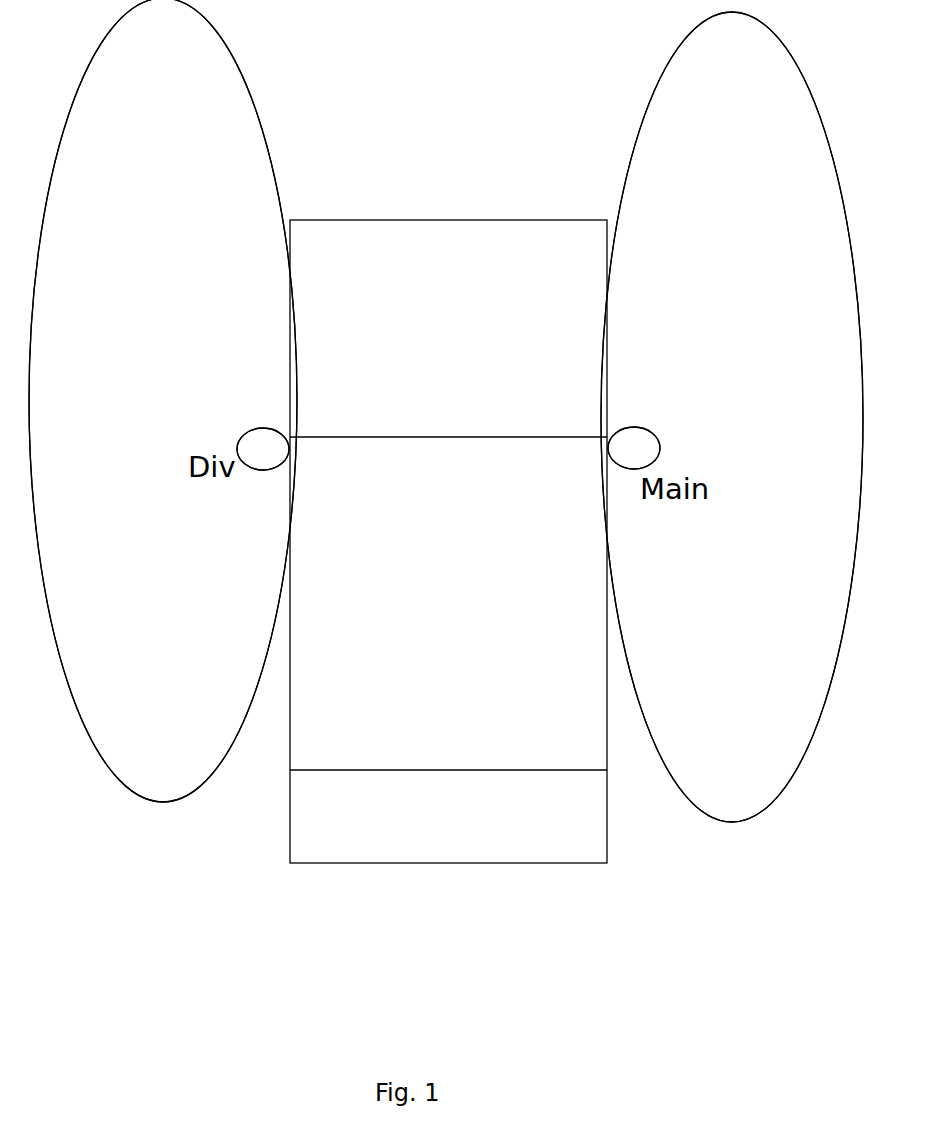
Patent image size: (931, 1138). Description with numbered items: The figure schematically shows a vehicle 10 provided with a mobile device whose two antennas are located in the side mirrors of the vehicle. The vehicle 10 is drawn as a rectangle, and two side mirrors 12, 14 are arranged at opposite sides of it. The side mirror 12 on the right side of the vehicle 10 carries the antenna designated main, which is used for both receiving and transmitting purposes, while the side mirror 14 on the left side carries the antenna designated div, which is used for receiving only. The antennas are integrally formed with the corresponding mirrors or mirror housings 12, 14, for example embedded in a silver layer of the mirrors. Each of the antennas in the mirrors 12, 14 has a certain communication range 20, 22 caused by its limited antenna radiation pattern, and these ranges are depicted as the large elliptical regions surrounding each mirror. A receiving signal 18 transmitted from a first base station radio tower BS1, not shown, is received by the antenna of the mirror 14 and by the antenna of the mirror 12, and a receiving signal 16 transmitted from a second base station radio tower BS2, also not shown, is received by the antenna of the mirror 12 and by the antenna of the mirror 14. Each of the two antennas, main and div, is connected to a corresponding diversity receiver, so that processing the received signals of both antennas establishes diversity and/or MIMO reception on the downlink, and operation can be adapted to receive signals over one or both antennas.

The vehicle 10 is at (340, 303).
The side mirror 12 is at (640, 427).
The side mirror 14 is at (257, 427).
The receiving signal 16 is at (743, 262).
The receiving signal 18 is at (143, 200).
The communication range 20 is at (780, 792).
The communication range 22 is at (195, 793).
The first base station radio tower BS1 is at (252, 398).
The second base station radio tower BS2 is at (655, 395).